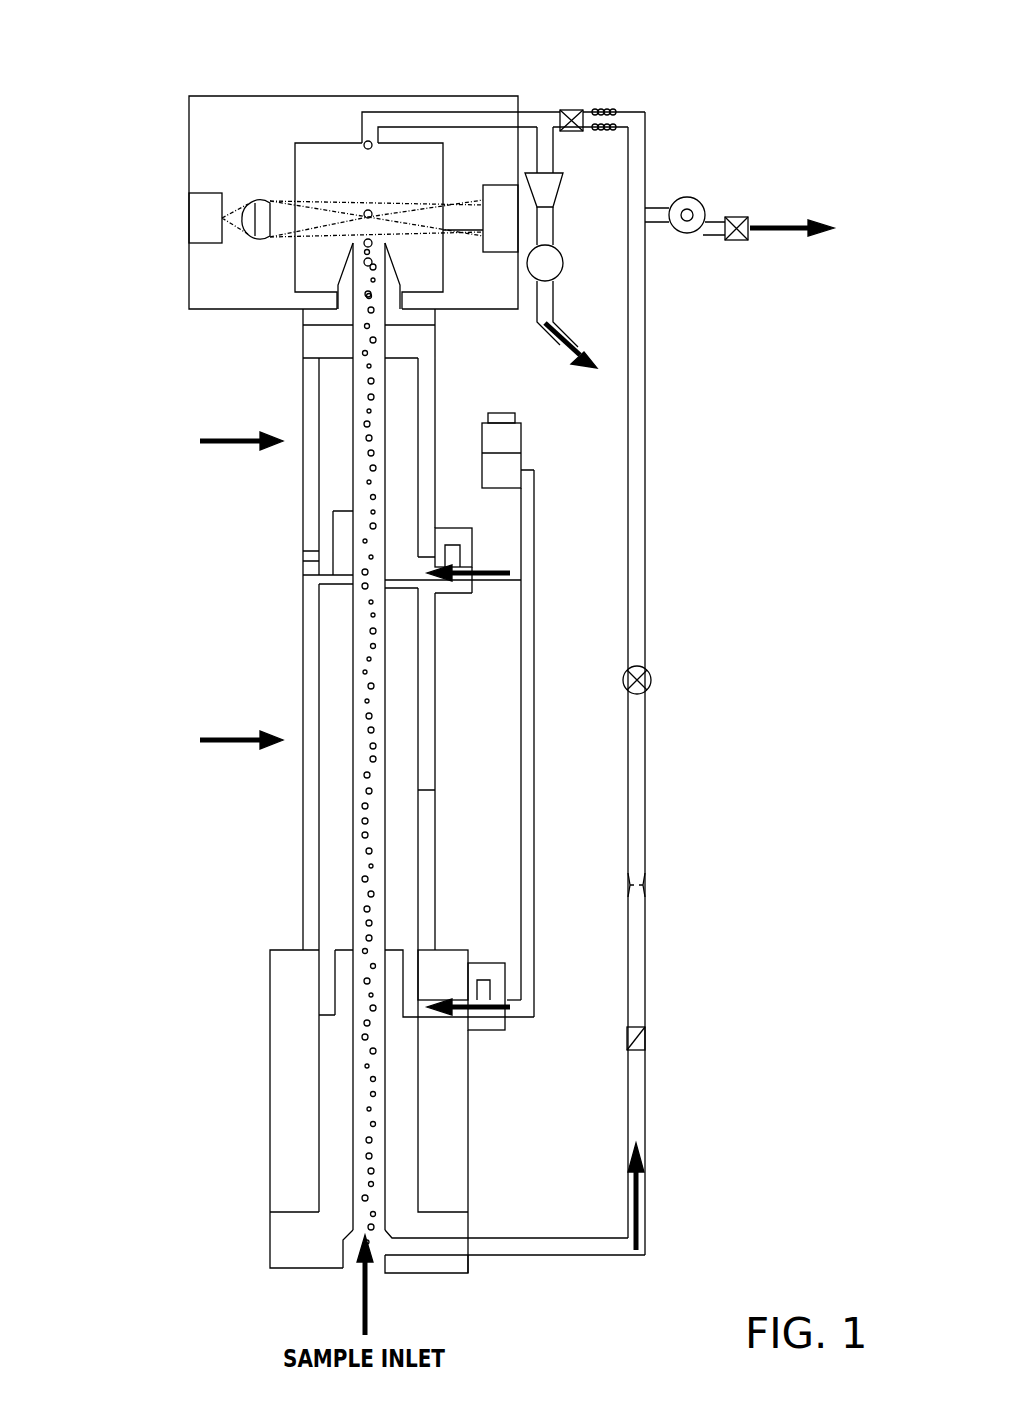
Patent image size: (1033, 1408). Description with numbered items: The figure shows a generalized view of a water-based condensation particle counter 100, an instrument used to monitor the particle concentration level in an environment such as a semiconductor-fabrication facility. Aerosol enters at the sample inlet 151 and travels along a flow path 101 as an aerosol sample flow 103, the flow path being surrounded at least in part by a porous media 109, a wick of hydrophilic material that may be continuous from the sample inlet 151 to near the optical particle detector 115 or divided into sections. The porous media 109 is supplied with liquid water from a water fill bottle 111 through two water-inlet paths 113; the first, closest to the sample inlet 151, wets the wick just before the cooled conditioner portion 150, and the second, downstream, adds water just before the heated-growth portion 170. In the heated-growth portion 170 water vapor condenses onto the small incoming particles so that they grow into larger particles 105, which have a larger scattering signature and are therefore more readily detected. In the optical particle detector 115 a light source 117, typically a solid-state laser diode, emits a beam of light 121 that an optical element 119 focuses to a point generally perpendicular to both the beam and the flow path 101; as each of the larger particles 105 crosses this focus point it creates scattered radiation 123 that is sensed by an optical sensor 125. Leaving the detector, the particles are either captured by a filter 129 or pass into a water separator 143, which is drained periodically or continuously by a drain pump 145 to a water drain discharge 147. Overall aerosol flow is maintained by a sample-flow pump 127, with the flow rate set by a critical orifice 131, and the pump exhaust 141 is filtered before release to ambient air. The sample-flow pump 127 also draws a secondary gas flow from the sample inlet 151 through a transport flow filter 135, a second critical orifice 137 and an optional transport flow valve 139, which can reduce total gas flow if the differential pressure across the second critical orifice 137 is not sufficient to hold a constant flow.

The water-based condensation particle counter 100 is at (112, 26).
The flow path 101 is at (366, 1156).
The aerosol sample flow 103 is at (370, 973).
The larger particles 105 is at (370, 352).
The porous media 109 is at (330, 700).
The water fill bottle 111 is at (522, 460).
The water-inlet paths 113 is at (480, 990).
The optical particle detector 115 is at (178, 136).
The light source 117 is at (188, 212).
The optical element 119 is at (265, 238).
The beam of light 121 is at (326, 210).
The scattered radiation 123 is at (397, 225).
The optical sensor 125 is at (500, 183).
The sample-flow pump 127 is at (690, 198).
The filter 129 is at (574, 108).
The critical orifice 131 is at (616, 110).
The transport flow filter 135 is at (646, 1040).
The second critical orifice 137 is at (646, 888).
The transport flow valve 139 is at (648, 672).
The pump exhaust 141 is at (762, 225).
The water separator 143 is at (560, 195).
The drain pump 145 is at (562, 265).
The water drain discharge 147 is at (582, 362).
The cooled conditioner portion 150 is at (220, 744).
The sample inlet 151 is at (350, 1270).
The heated-growth portion 170 is at (220, 445).